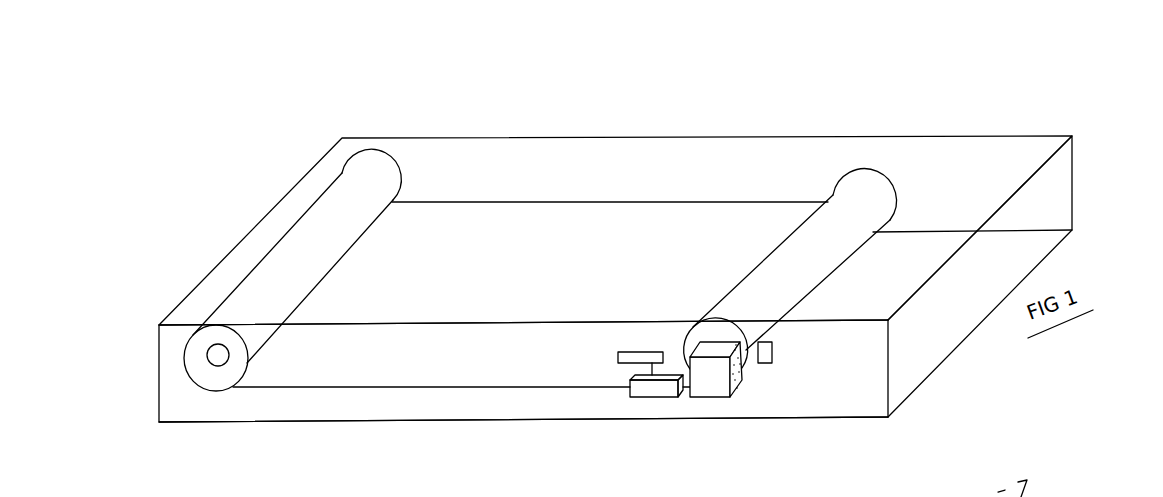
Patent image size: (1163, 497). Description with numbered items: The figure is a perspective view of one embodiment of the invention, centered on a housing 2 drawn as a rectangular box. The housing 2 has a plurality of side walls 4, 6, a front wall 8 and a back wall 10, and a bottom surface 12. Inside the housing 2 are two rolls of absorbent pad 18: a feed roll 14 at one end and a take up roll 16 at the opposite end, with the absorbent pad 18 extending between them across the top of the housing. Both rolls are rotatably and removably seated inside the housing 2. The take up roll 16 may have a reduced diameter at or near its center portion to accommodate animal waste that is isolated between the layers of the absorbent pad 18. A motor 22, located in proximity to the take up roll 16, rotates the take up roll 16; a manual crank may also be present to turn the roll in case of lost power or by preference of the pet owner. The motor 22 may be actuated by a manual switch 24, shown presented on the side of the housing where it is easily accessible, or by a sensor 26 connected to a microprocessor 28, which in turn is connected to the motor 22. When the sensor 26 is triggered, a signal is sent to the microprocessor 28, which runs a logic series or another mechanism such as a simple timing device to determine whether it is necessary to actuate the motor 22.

The housing 2 is at (1068, 70).
The side wall 4 is at (512, 147).
The side wall 6 is at (315, 357).
The front wall 8 is at (240, 257).
The back wall 10 is at (983, 257).
The bottom surface 12 is at (535, 405).
The feed roll 14 is at (190, 360).
The take up roll 16 is at (873, 187).
The absorbent pad 18 is at (493, 273).
The motor 22 is at (717, 383).
The manual switch 24 is at (765, 353).
The sensor 26 is at (627, 360).
The microprocessor 28 is at (660, 390).